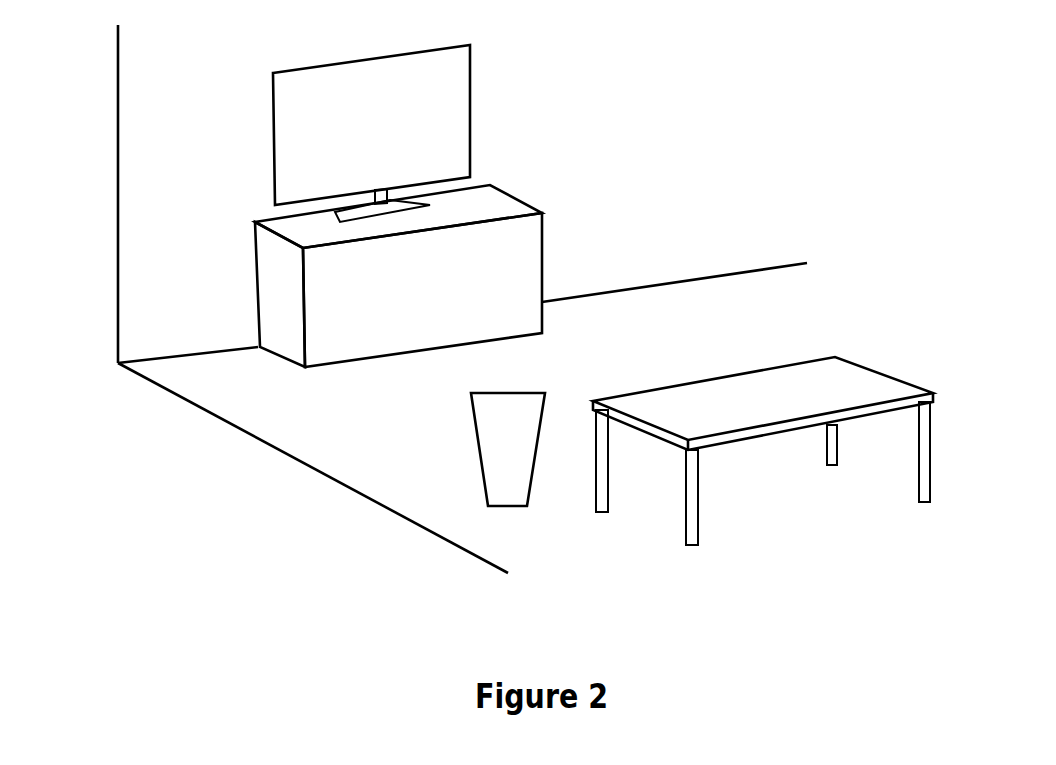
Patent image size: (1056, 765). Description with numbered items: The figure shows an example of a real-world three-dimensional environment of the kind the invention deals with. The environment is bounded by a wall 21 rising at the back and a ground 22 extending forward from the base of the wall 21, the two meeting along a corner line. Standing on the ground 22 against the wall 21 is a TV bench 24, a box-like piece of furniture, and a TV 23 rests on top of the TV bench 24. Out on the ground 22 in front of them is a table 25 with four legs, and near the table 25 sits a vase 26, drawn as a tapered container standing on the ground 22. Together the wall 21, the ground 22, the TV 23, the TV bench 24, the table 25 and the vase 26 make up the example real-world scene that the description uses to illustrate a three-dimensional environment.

The wall 21 is at (143, 135).
The ground 22 is at (298, 452).
The TV 23 is at (458, 81).
The TV bench 24 is at (543, 252).
The table 25 is at (927, 418).
The vase 26 is at (487, 438).